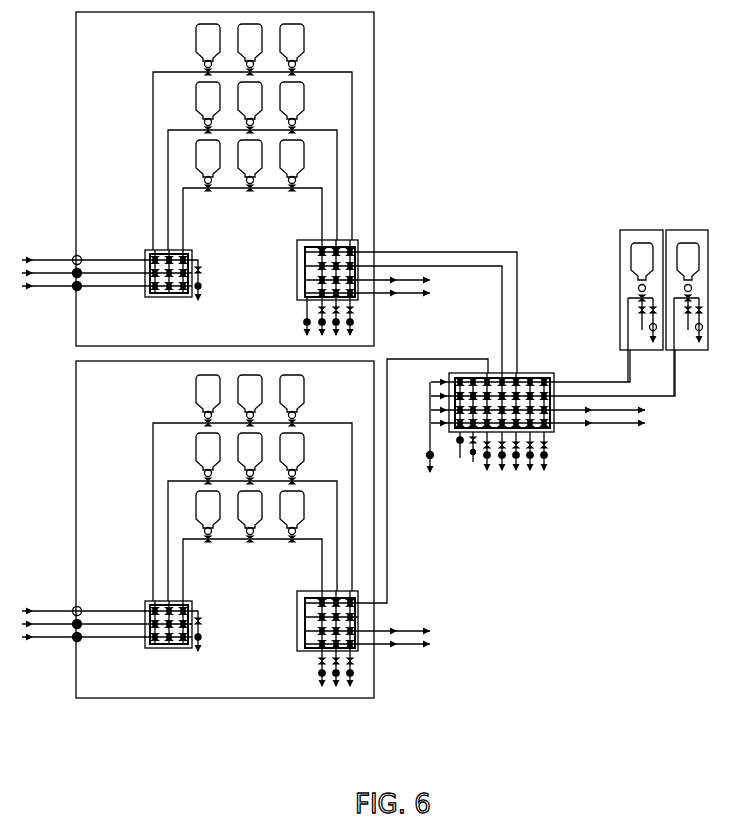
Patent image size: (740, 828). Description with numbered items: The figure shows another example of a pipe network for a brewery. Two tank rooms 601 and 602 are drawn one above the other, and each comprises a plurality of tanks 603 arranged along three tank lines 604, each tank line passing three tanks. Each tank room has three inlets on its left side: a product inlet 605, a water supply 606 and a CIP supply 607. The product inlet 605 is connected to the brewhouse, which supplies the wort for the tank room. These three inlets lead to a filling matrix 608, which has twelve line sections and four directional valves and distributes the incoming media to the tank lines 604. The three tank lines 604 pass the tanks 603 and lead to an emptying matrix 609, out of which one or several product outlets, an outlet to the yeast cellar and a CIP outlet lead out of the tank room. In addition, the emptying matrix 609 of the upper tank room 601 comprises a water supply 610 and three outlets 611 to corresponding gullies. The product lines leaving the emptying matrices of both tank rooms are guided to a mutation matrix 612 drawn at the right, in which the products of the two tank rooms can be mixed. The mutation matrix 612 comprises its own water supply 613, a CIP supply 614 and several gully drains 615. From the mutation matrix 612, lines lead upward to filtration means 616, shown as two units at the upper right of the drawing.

The tank room 601 is at (76, 30).
The tank room 602 is at (76, 380).
The tanks 603 is at (304, 41).
The tank lines 604 is at (152, 97).
The product inlet 605 is at (72, 257).
The water supply 606 is at (73, 291).
The CIP supply 607 is at (80, 294).
The filling matrix 608 is at (192, 253).
The emptying matrix 609 is at (297, 268).
The water supply 610 is at (303, 322).
The outlets 611 is at (356, 322).
The mutation matrix 612 is at (554, 432).
The water supply 613 is at (458, 442).
The CIP supply 614 is at (473, 445).
The gully drains 615 is at (548, 458).
The filtration means 616 is at (672, 229).